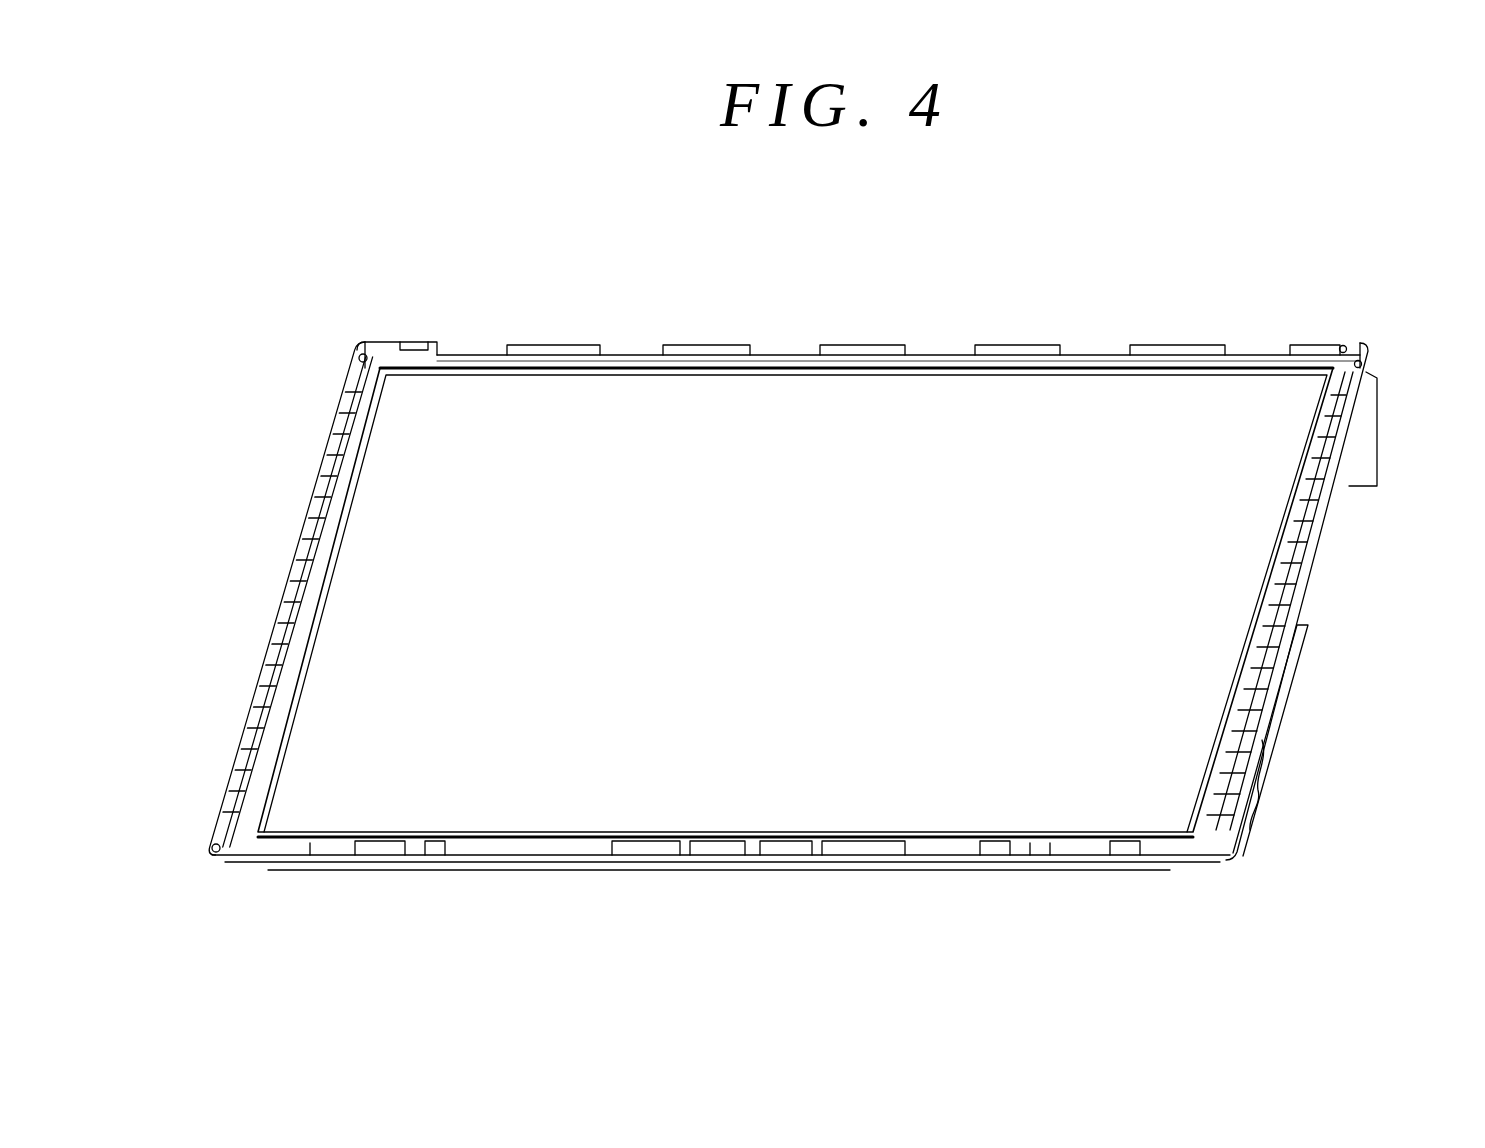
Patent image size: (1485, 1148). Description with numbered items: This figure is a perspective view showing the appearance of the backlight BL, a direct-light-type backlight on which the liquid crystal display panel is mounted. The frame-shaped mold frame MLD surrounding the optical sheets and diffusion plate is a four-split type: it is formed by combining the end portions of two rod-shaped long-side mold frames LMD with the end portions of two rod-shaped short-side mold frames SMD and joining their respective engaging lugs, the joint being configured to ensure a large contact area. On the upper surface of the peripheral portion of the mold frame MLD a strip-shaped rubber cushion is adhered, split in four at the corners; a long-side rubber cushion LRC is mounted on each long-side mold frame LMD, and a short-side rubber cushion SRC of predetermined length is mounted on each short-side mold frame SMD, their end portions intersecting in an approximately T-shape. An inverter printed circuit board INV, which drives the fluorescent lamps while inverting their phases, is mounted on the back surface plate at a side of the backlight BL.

The long-side mold frame LMD is at (628, 360).
The backlight BL is at (790, 343).
The mold frame MLD is at (937, 360).
The long-side rubber cushion LRC is at (1254, 357).
The short-side mold frame SMD is at (322, 508).
The short-side rubber cushion SRC is at (300, 672).
The inverter printed circuit board INV is at (1263, 778).